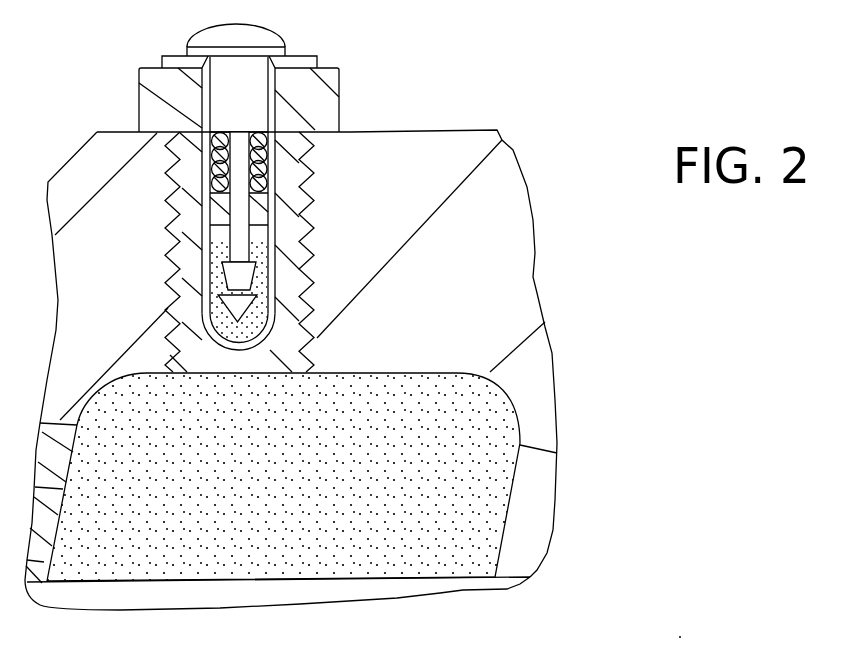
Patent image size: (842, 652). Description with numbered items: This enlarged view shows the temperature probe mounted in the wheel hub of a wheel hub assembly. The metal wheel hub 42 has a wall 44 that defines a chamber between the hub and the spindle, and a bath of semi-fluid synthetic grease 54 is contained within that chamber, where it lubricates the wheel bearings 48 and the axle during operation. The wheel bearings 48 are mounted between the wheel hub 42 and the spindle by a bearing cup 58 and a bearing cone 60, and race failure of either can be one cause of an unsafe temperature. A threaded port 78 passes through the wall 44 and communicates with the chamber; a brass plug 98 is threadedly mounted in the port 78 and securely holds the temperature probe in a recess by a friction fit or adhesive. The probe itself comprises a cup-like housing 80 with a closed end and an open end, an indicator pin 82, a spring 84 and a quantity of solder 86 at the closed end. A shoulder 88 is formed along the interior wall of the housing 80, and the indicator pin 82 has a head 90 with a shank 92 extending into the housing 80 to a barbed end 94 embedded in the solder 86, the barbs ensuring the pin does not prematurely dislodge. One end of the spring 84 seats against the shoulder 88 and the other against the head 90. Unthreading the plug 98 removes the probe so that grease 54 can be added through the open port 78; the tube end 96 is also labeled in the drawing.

The wheel hub 42 is at (502, 277).
The wall 44 is at (120, 274).
The wheel bearings 48 is at (500, 517).
The semi-fluid synthetic grease 54 is at (446, 395).
The bearing cup 58 is at (37, 592).
The bearing cone 60 is at (55, 467).
The port 78 is at (330, 188).
The housing 80 is at (273, 272).
The indicator pin 82 is at (281, 33).
The spring 84 is at (263, 162).
The solder 86 is at (253, 312).
The shoulder 88 is at (260, 214).
The head 90 is at (214, 37).
The shank 92 is at (238, 212).
The barbed end 94 is at (229, 300).
The tube end 96 is at (242, 331).
The brass plug 98 is at (156, 103).